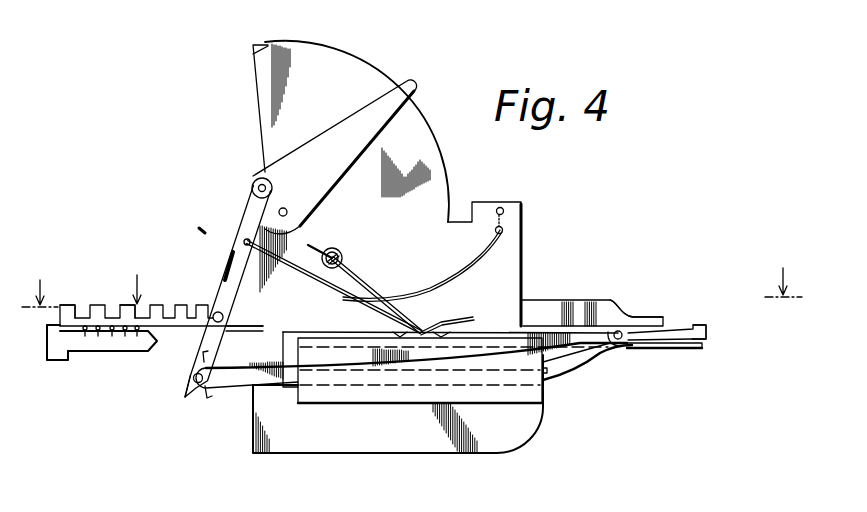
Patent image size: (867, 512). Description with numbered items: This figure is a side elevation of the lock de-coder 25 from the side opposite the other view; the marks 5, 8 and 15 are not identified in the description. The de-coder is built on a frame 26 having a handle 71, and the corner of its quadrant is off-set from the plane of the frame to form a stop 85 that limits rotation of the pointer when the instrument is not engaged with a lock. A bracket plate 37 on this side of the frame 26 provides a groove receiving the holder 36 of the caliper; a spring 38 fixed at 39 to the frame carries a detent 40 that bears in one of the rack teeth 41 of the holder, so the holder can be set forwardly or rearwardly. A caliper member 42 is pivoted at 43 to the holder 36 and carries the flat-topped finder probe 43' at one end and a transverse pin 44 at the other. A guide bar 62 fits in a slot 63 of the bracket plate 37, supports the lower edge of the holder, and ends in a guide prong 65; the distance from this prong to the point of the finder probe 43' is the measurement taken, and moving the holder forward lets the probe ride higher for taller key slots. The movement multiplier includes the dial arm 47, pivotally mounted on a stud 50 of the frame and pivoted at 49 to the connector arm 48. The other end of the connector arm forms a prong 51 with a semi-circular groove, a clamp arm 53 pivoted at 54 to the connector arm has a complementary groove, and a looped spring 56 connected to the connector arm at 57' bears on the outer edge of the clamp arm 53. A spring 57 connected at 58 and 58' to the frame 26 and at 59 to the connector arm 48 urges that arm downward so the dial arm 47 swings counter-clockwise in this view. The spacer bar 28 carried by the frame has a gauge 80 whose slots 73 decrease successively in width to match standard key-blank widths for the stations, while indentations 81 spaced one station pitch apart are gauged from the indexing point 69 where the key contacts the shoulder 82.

The section line 5- 5 is at (412, 271).
The slide bar 8 is at (118, 352).
The slide member 15 is at (90, 356).
The lock de-coder 25 is at (318, 455).
The frame 26 is at (267, 98).
The spacer bar 28 is at (651, 315).
The holder 36 is at (504, 324).
The bracket plate 37 is at (330, 340).
The spring 38 is at (362, 278).
The spring fixing point 39 is at (334, 248).
The detent 40 is at (430, 318).
The rack tooth 41 is at (413, 340).
The caliper member 42 is at (689, 327).
The pivot connection 43 is at (608, 307).
The finder probe 43' is at (726, 326).
The pin 44 is at (233, 370).
The dial arm 47 is at (336, 135).
The connector arm 48 is at (243, 216).
The pivot connection 49 is at (257, 182).
The pin or stud 50 is at (286, 208).
The prong 51 is at (185, 395).
The clamp arm 53 is at (213, 340).
The pivot connection 54 is at (228, 316).
The looped spring 56 is at (231, 258).
The spring 57 is at (370, 265).
The spring connection point 57' is at (186, 229).
The spring connection point 58 is at (533, 221).
The spring connection point 58' is at (515, 194).
The spring connection point 59 is at (244, 240).
The guide bar 62 is at (567, 360).
The slot 63 is at (338, 392).
The guide prong 65 is at (697, 351).
The indexing point 69 is at (60, 356).
The handle 71 is at (464, 206).
The slots 73 is at (164, 312).
The gauge 80 is at (137, 277).
The indentations 81 is at (102, 325).
The shoulder 82 is at (72, 325).
The stop 85 is at (254, 50).